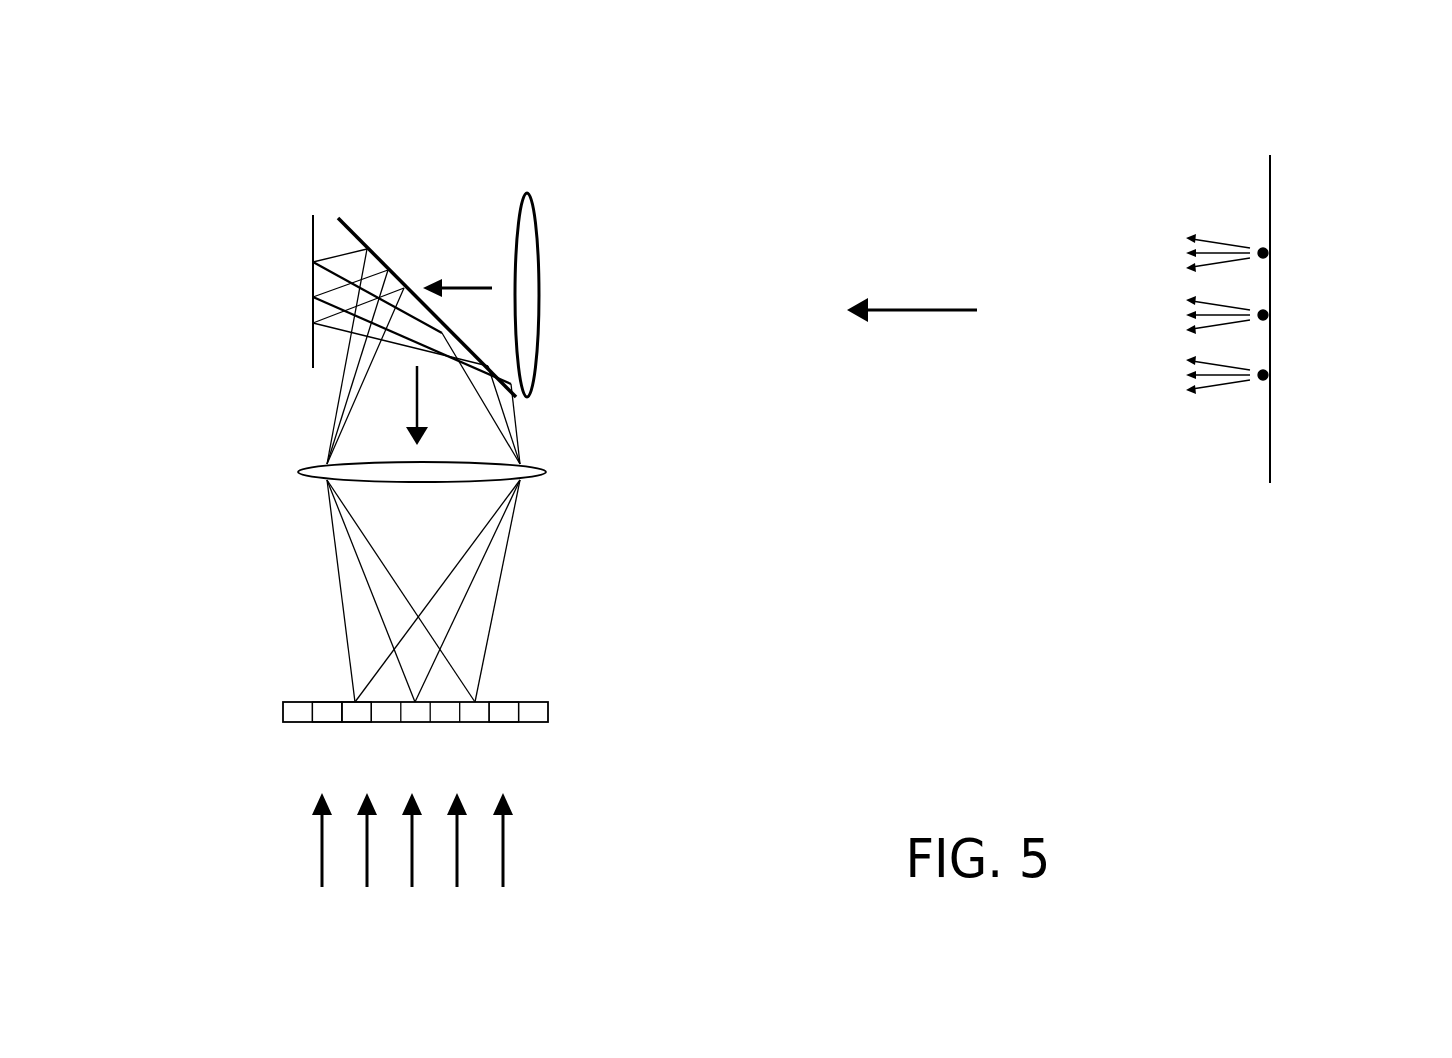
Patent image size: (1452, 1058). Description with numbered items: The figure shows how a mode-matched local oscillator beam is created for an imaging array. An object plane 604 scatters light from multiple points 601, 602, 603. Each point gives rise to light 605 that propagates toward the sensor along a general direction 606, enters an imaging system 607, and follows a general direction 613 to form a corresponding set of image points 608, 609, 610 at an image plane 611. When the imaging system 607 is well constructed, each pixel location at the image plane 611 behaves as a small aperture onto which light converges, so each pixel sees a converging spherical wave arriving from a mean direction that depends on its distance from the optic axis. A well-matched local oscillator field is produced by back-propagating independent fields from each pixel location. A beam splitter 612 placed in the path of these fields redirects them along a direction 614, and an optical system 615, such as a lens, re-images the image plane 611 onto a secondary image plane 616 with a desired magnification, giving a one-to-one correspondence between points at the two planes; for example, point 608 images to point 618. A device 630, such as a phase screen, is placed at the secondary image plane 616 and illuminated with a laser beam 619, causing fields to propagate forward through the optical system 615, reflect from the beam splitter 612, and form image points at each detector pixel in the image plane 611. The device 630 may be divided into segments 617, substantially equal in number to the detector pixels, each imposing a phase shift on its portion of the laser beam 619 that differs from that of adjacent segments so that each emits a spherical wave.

The scattering point 601 is at (1272, 250).
The scattering point 602 is at (1272, 313).
The scattering point 603 is at (1272, 373).
The object plane 604 is at (1272, 175).
The light 605 is at (1211, 212).
The general direction 606 is at (912, 332).
The imaging system 607 is at (527, 193).
The image point 608 is at (310, 322).
The image point 609 is at (310, 295).
The image point 610 is at (310, 262).
The image plane 611 is at (313, 233).
The beam splitter 612 is at (347, 225).
The general direction 613 is at (457, 260).
The direction 614 is at (443, 405).
The optical system 615 is at (537, 482).
The secondary image plane 616 is at (503, 702).
The segment 617 is at (322, 713).
The point 618 is at (353, 697).
The laser beam 619 is at (318, 843).
The device 630 is at (548, 720).